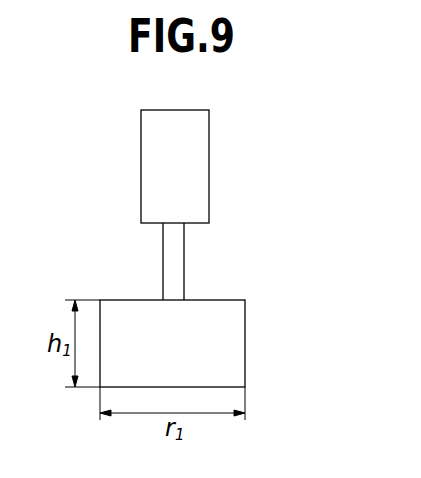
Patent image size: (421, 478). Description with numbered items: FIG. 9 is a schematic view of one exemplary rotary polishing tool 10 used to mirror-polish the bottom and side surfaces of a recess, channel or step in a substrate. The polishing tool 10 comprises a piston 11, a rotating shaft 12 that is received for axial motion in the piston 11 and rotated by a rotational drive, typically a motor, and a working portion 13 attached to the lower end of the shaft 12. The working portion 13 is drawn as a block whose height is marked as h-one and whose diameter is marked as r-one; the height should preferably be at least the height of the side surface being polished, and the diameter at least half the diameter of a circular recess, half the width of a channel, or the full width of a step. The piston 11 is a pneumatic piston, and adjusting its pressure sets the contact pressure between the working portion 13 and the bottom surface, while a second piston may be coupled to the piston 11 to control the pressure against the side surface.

The polishing tool 10 is at (226, 121).
The piston 11 is at (195, 178).
The rotating shaft 12 is at (176, 254).
The working portion 13 is at (232, 337).